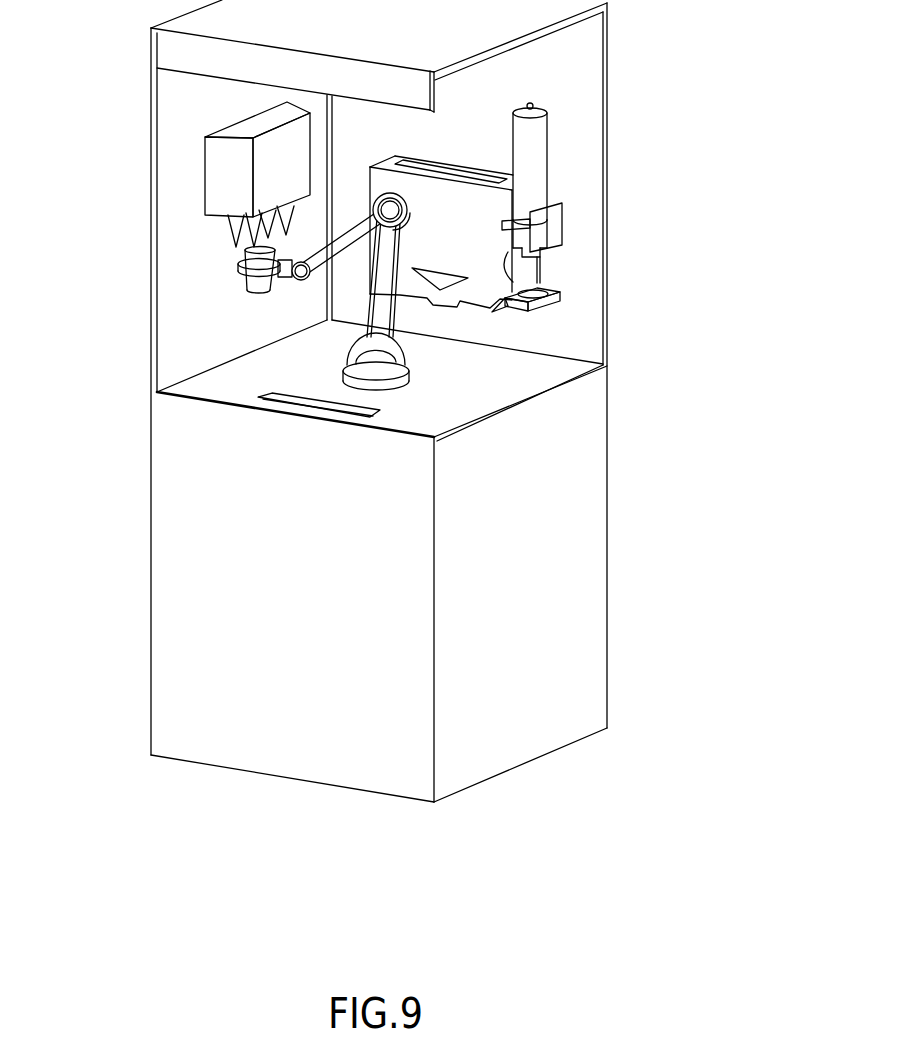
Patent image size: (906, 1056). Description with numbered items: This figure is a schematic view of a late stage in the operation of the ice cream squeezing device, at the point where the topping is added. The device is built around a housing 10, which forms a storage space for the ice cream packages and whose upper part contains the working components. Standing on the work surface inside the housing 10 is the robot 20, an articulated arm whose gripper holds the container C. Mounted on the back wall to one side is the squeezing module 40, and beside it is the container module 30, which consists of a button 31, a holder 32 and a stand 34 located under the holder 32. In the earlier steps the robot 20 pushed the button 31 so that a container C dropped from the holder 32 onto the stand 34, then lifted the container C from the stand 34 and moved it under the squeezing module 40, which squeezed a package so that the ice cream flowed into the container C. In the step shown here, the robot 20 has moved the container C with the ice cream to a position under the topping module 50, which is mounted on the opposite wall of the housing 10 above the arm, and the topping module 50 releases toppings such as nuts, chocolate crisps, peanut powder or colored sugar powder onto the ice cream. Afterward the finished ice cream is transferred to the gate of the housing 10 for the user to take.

The housing 10 is at (567, 622).
The robot 20 is at (385, 312).
The container module 30 is at (626, 224).
The button 31 is at (535, 223).
The holder 32 is at (532, 175).
The stand 34 is at (555, 288).
The squeezing module 40 is at (450, 203).
The topping module 50 is at (228, 172).
The container C is at (538, 312).